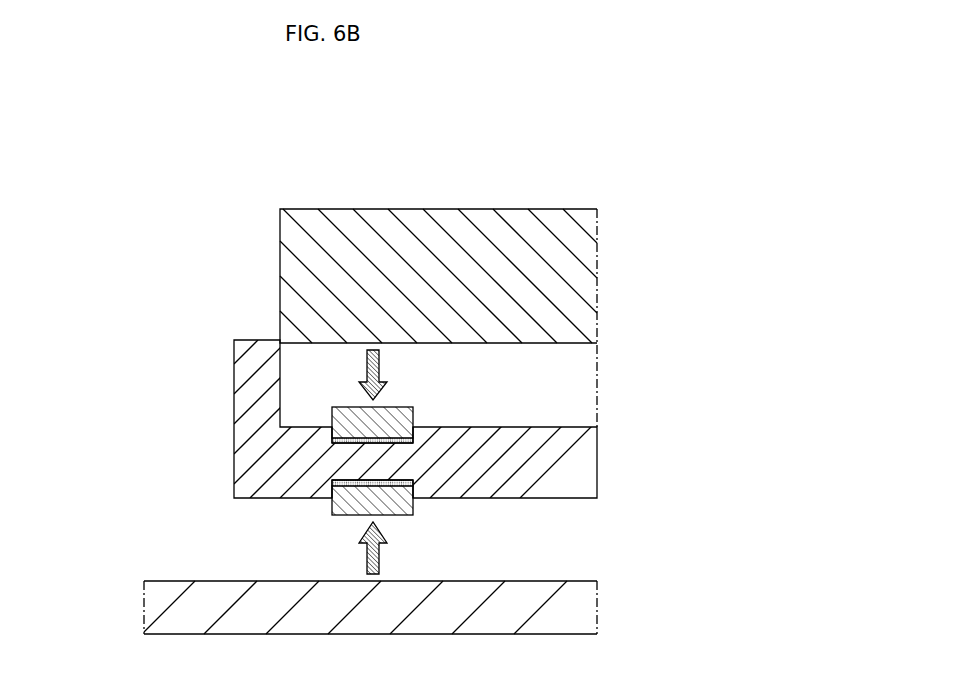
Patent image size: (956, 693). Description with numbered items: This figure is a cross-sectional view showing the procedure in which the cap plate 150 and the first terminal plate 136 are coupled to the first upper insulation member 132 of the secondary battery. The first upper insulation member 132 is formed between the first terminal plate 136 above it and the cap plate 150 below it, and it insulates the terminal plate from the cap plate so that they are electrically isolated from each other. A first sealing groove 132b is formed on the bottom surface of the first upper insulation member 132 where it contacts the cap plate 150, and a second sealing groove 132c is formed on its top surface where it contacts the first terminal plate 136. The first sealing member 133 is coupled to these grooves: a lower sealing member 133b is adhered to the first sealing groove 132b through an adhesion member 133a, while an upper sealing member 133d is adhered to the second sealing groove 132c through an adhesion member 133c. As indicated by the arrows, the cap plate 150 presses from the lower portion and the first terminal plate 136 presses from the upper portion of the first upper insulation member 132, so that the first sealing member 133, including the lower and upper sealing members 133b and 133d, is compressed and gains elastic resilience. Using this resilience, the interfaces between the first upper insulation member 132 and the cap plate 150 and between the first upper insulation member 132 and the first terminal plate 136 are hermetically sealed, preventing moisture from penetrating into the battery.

The first terminal plate 136 is at (358, 226).
The first upper insulation member 132 is at (608, 452).
The second sealing groove 132c is at (331, 440).
The first sealing groove 132b is at (332, 484).
The first sealing member 133 is at (354, 462).
The adhesion member 133a is at (413, 483).
The lower sealing member 133b is at (413, 512).
The adhesion member 133c is at (413, 440).
The upper sealing member 133d is at (413, 417).
The cap plate 150 is at (157, 608).